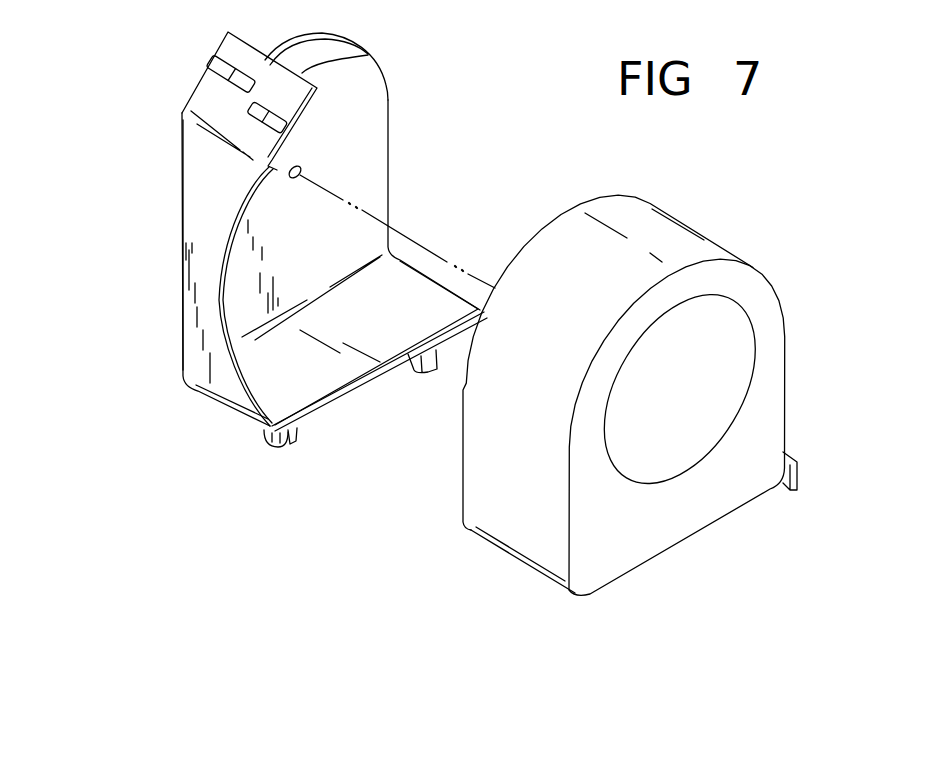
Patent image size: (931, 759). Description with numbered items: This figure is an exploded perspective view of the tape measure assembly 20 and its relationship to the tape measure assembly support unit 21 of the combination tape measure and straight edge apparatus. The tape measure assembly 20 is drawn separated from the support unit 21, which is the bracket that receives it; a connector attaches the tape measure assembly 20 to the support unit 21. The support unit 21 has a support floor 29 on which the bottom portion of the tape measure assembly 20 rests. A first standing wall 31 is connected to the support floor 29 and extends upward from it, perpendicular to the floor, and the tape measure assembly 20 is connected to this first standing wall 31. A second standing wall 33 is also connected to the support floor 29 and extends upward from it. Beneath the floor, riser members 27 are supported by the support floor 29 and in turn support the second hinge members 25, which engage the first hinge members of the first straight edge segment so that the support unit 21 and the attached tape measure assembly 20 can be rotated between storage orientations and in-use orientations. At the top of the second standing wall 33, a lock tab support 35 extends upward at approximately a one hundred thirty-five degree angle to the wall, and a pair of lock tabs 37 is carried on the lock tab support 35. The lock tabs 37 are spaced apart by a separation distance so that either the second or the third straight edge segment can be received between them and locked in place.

The tape measure assembly 20 is at (745, 246).
The tape measure assembly support unit 21 is at (176, 282).
The second hinge members 25 is at (268, 440).
The riser members 27 is at (297, 428).
The support floor 29 is at (418, 303).
The first standing wall 31 is at (357, 127).
The second standing wall 33 is at (210, 190).
The lock tab support 35 is at (368, 56).
The lock tabs 37 is at (208, 73).